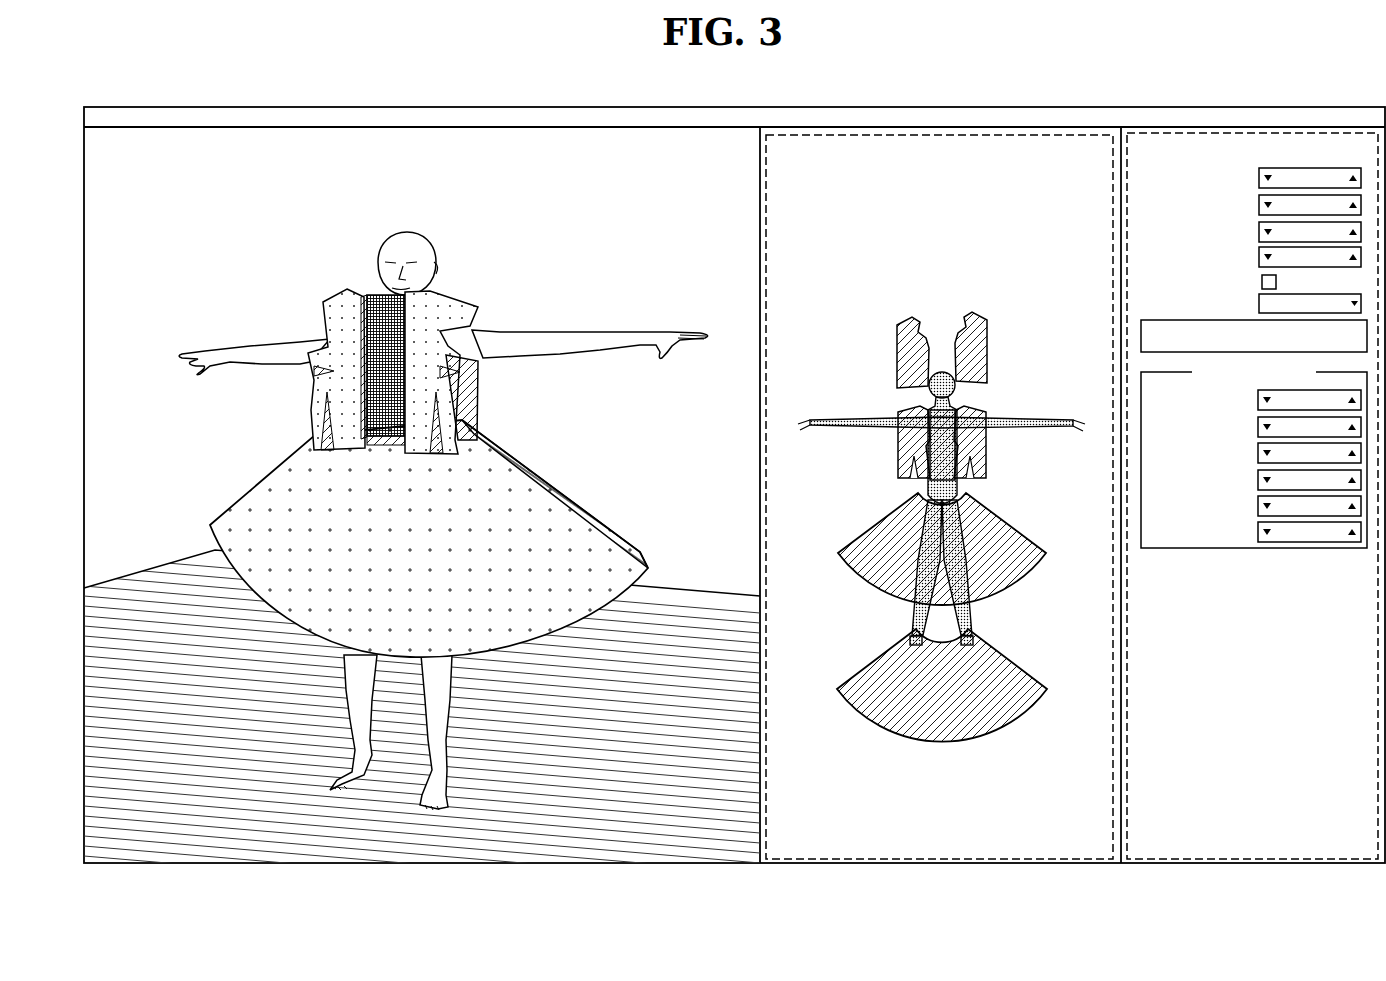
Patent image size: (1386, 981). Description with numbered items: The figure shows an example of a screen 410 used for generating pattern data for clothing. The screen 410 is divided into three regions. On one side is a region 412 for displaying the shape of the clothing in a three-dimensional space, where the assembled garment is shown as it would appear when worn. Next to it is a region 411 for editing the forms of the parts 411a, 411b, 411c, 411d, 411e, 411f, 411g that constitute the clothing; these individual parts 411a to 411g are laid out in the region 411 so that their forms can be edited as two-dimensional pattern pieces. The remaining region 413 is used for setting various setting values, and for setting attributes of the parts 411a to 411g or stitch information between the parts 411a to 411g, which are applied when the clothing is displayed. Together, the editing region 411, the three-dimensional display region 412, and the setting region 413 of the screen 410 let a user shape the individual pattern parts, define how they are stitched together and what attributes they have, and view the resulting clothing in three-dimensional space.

The screen 410 is at (1298, 72).
The region for editing forms of parts 411 is at (942, 860).
The part 411a is at (908, 320).
The part 411b is at (962, 312).
The part 411c is at (905, 446).
The part 411d is at (938, 427).
The part 411e is at (985, 412).
The part 411f is at (1003, 527).
The part 411g is at (1008, 674).
The region for displaying a shape of clothing in a 3D space 412 is at (396, 835).
The region for setting setting values or attributes 413 is at (1252, 860).